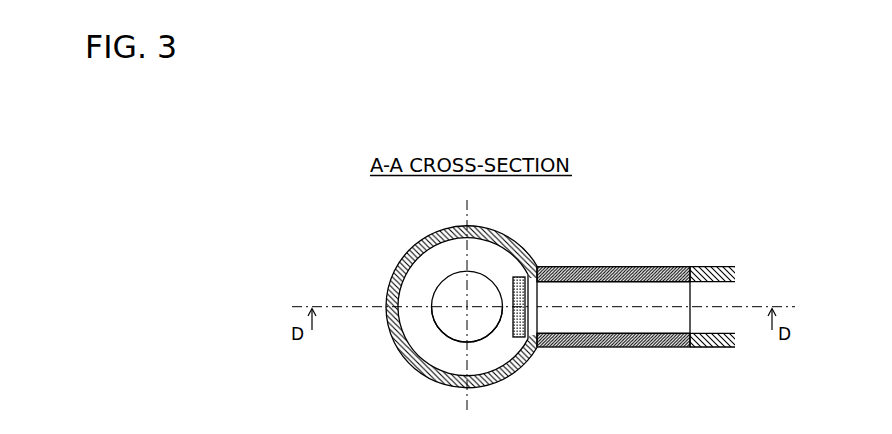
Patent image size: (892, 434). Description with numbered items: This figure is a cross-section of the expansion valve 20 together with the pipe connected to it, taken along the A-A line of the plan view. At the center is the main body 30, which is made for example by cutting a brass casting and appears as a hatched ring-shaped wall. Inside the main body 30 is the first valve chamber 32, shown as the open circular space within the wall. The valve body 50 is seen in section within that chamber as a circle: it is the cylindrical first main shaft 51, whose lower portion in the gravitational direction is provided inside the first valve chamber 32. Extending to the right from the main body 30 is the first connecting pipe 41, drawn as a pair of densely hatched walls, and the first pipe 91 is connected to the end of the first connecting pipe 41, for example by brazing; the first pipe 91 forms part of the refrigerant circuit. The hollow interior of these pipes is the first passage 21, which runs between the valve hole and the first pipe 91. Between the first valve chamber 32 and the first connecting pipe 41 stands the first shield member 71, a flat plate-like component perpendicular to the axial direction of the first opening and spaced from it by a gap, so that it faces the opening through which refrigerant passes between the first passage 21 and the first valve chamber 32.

The expansion valve 20 is at (382, 247).
The first passage 21 is at (622, 317).
The main body 30 is at (523, 243).
The first valve chamber 32 is at (447, 264).
The first connecting pipe 41 is at (623, 268).
The valve body 50 is at (457, 300).
The first main shaft 51 is at (458, 318).
The first shield member 71 is at (529, 356).
The first pipe 91 is at (717, 268).